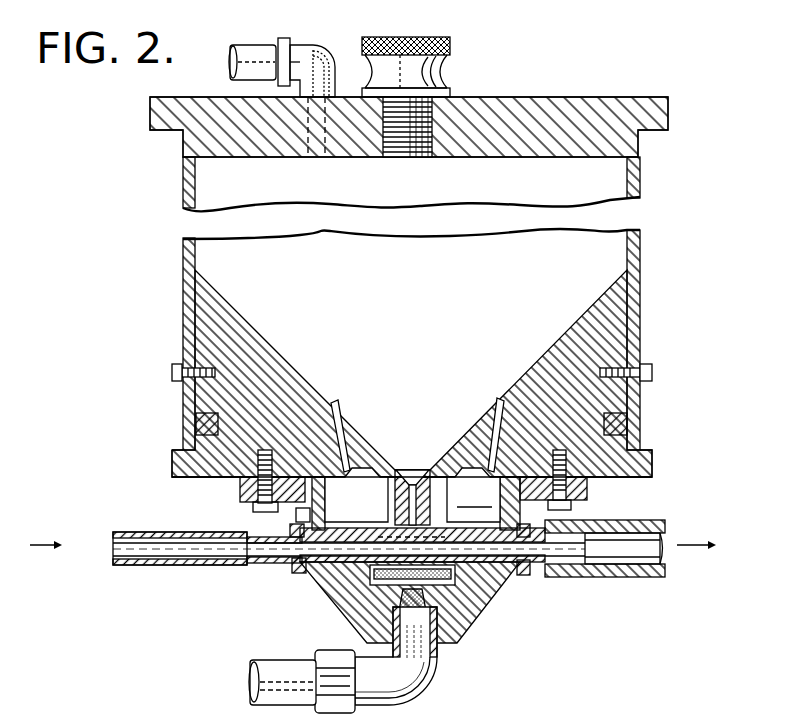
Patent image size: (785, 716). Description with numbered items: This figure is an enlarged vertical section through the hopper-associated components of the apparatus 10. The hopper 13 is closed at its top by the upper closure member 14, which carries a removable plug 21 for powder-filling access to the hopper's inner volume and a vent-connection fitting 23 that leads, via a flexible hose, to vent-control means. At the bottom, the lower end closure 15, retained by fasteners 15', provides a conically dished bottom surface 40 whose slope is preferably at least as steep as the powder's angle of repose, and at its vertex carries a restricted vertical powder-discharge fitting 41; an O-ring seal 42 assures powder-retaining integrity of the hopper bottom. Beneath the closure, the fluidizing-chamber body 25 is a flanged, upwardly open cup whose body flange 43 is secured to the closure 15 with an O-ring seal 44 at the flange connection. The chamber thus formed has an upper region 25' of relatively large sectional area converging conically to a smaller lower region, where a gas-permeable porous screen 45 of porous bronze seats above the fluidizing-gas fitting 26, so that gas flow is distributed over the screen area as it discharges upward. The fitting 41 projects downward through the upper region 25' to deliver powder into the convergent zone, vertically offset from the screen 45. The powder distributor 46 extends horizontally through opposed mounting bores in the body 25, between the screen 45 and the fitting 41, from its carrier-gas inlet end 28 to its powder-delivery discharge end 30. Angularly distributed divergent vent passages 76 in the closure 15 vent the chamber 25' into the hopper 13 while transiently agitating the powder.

The dispensing apparatus 10 is at (598, 88).
The hopper 13 is at (642, 232).
The upper closure member 14 is at (482, 100).
The lower end closure 15 is at (448, 458).
The screw 15' is at (443, 362).
The removable plug 21 is at (448, 42).
The vent-connection fitting 23 is at (303, 43).
The fluidizing-chamber body 25 is at (387, 602).
The upper region 25' is at (473, 495).
The fitting 26 is at (440, 694).
The carrier-gas inlet end 28 is at (296, 571).
The powder-delivery discharge end 30 is at (533, 576).
The conically dished bottom surface 40 is at (265, 330).
The vertical powder-discharge fitting 41 is at (413, 470).
The O-ring seal 42 is at (628, 428).
The body flange 43 is at (240, 487).
The O-ring seal 44 is at (356, 495).
The gas-permeable porous screen 45 is at (356, 611).
The powder distributor 46 is at (362, 518).
The vent passages 76 is at (336, 412).